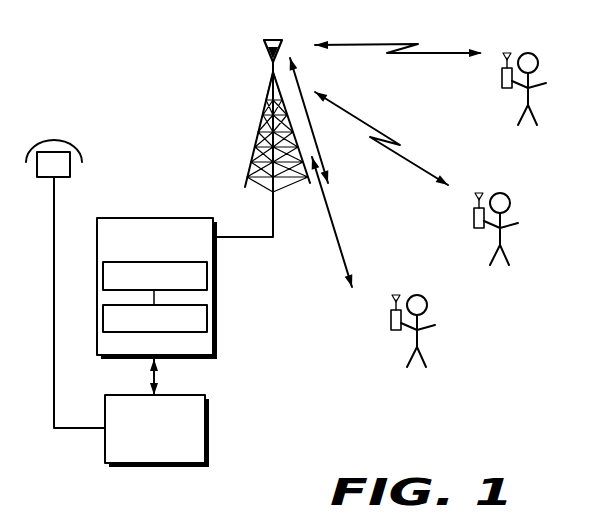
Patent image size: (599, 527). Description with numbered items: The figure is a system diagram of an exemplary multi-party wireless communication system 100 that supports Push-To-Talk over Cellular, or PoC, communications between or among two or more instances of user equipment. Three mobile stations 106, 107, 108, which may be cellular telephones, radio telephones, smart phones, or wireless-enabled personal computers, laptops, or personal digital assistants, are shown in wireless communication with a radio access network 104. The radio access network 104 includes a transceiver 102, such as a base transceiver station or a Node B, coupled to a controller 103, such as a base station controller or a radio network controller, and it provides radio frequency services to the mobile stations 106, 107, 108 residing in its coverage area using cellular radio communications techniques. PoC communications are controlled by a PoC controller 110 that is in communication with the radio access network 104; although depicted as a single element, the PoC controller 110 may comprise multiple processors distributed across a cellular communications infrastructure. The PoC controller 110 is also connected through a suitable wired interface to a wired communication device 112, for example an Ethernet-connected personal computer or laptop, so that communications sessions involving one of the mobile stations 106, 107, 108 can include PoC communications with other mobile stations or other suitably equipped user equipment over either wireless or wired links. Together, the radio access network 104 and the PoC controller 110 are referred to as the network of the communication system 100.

The multi-party wireless communication system 100 is at (430, 458).
The transceiver 102 is at (170, 262).
The controller 103 is at (150, 333).
The radio access network 104 is at (155, 218).
The mobile station 106 is at (504, 89).
The mobile station 107 is at (476, 229).
The mobile station 108 is at (393, 331).
The PoC controller 110 is at (183, 395).
The wired communication device 112 is at (55, 141).